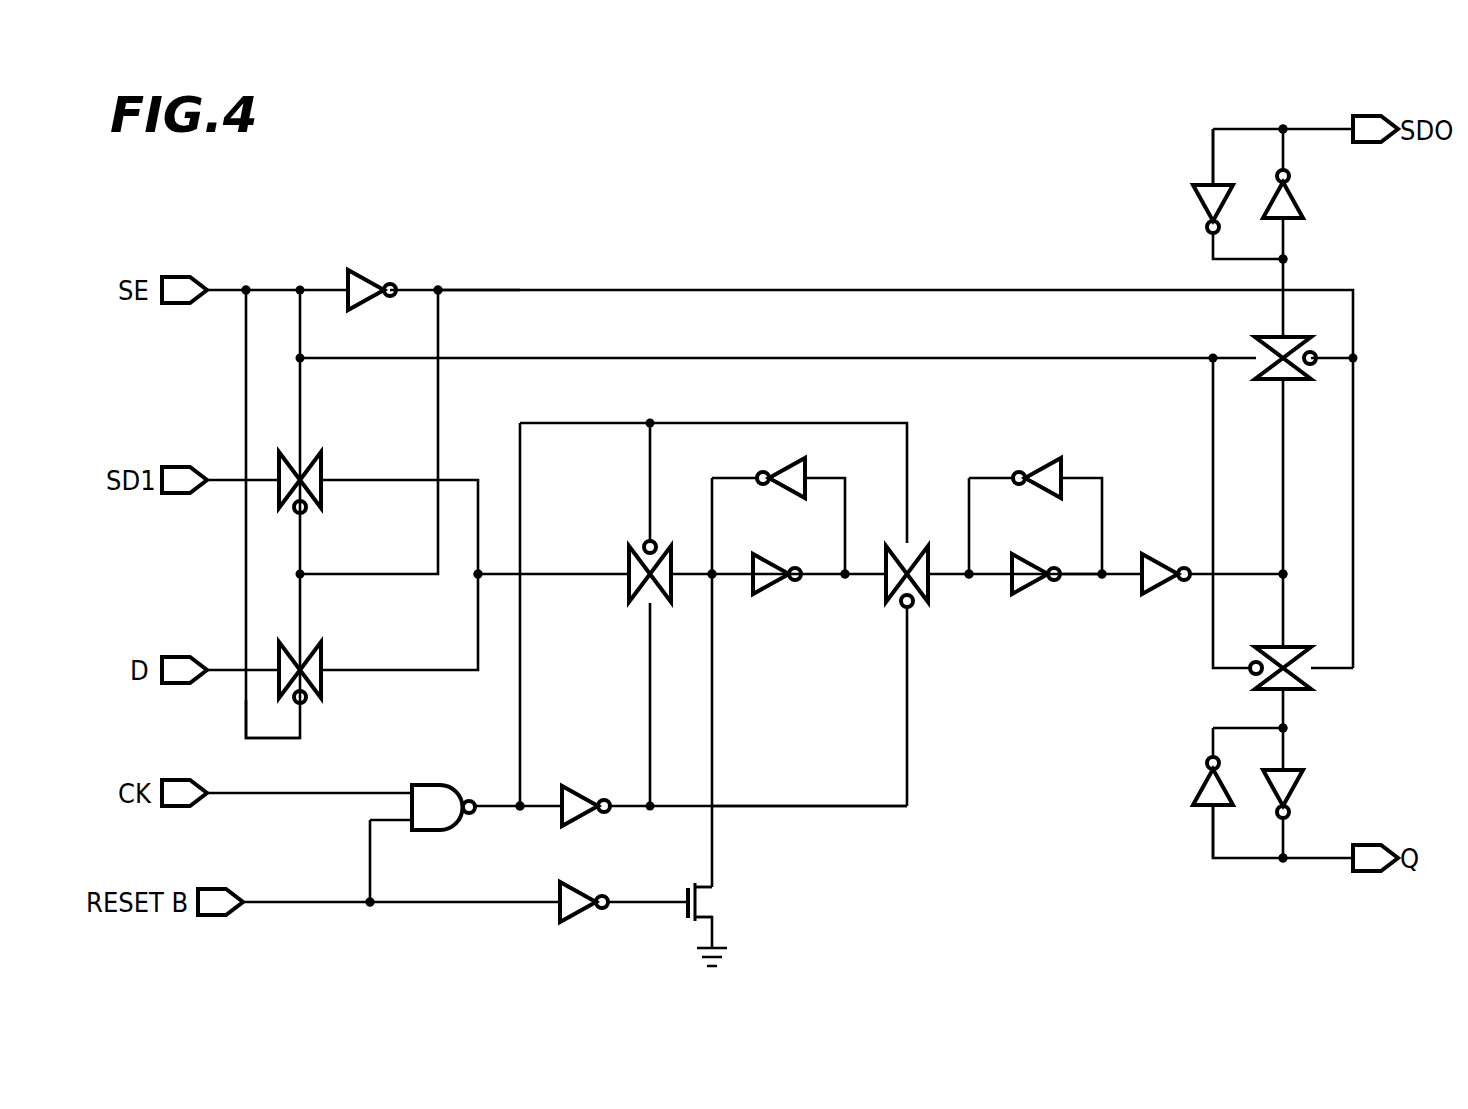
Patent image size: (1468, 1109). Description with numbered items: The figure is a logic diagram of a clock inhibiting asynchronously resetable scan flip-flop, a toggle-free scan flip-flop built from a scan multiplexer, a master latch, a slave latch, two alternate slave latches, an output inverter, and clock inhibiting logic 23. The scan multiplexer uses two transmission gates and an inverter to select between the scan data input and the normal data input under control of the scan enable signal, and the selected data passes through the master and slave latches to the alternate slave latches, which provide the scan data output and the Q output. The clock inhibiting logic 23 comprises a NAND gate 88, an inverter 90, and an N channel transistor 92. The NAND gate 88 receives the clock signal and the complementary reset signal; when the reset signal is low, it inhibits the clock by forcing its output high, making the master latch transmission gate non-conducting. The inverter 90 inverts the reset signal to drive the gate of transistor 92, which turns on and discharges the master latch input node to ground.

The clock inhibiting logic 23 is at (370, 920).
The NAND gate 88 is at (432, 785).
The inverter 90 is at (575, 922).
The N channel transistor 92 is at (700, 885).